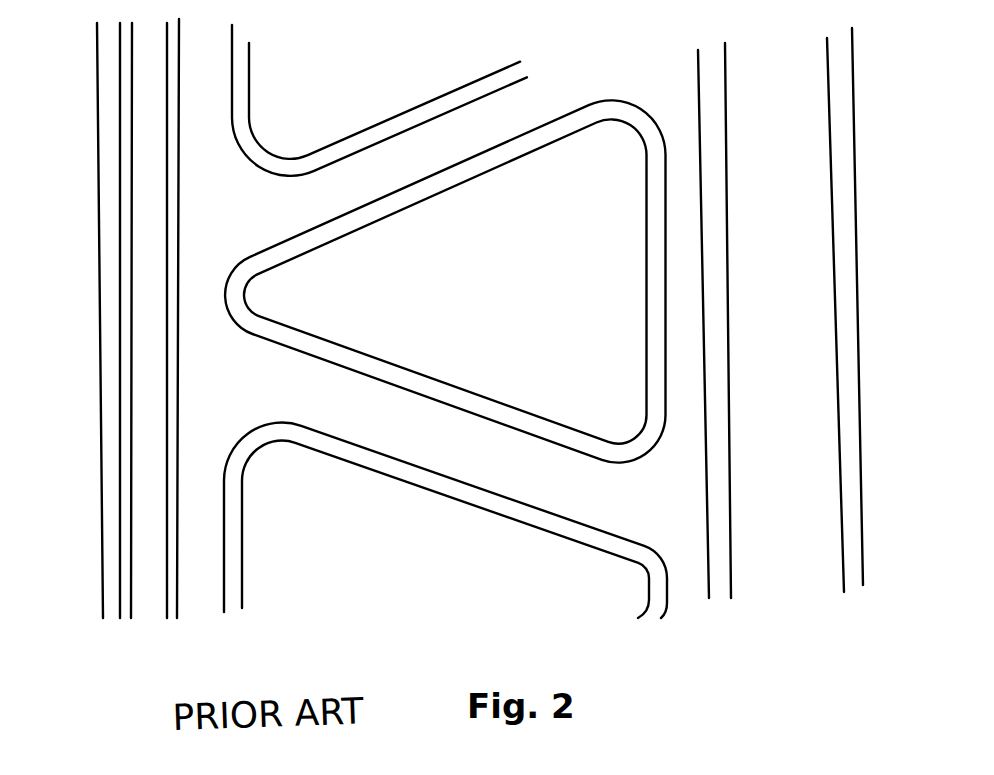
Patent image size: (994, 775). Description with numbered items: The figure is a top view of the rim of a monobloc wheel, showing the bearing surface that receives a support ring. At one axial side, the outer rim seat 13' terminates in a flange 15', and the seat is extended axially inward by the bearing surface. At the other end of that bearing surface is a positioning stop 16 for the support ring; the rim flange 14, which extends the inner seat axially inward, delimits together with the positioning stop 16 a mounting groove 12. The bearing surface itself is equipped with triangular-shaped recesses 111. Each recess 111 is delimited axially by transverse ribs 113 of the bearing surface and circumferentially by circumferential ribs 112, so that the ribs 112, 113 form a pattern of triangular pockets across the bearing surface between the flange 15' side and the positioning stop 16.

The mounting groove 12 is at (781, 476).
The outer rim seat 13' is at (96, 320).
The rim flange 14 is at (843, 155).
The flange 15' is at (71, 320).
The positioning stop 16 is at (713, 318).
The triangular-shaped recess 111 is at (505, 330).
The circumferential rib 112 is at (205, 145).
The transverse rib 113 is at (438, 145).